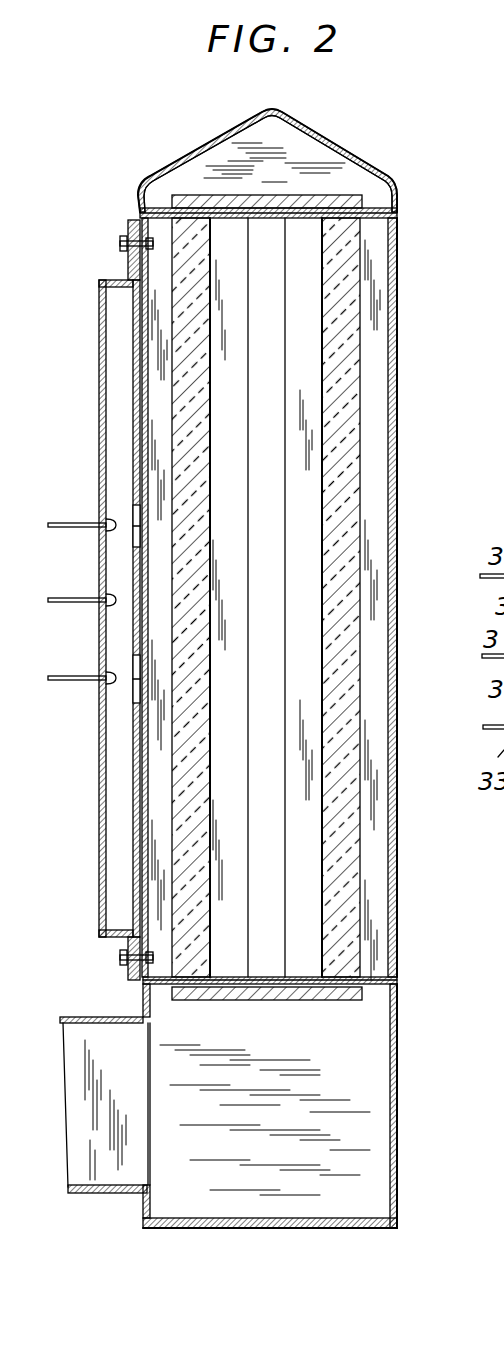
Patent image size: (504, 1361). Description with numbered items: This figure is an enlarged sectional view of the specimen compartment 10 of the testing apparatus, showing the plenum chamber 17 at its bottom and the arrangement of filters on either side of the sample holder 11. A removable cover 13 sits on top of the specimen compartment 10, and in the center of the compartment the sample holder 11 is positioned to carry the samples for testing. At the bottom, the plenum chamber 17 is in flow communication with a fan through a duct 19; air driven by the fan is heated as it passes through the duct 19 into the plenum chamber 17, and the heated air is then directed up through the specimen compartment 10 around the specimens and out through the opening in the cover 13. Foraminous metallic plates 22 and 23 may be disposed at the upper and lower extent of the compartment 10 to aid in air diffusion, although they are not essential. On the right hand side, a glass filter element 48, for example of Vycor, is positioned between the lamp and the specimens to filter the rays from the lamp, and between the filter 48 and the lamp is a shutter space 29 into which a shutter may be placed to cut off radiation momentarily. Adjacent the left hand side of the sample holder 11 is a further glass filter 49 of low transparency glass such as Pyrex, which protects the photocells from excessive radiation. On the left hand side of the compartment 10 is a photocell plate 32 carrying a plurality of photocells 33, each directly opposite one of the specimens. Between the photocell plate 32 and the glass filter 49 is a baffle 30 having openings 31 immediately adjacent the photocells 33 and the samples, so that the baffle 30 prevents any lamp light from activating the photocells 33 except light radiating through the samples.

The specimen compartment 10 is at (378, 310).
The sample holder 11 is at (268, 378).
The removable cover 13 is at (355, 155).
The plenum chamber 17 is at (398, 1078).
The duct 19 is at (128, 1193).
The foraminous metallic plate 22 is at (312, 194).
The foraminous metallic plate 23 is at (323, 998).
The shutter space 29 is at (398, 405).
The baffle 30 is at (132, 440).
The openings 31 is at (137, 535).
The photocell plate 32 is at (99, 395).
The photocells 33 is at (104, 520).
The glass filter element 48 is at (358, 243).
The glass filter 49 is at (206, 383).